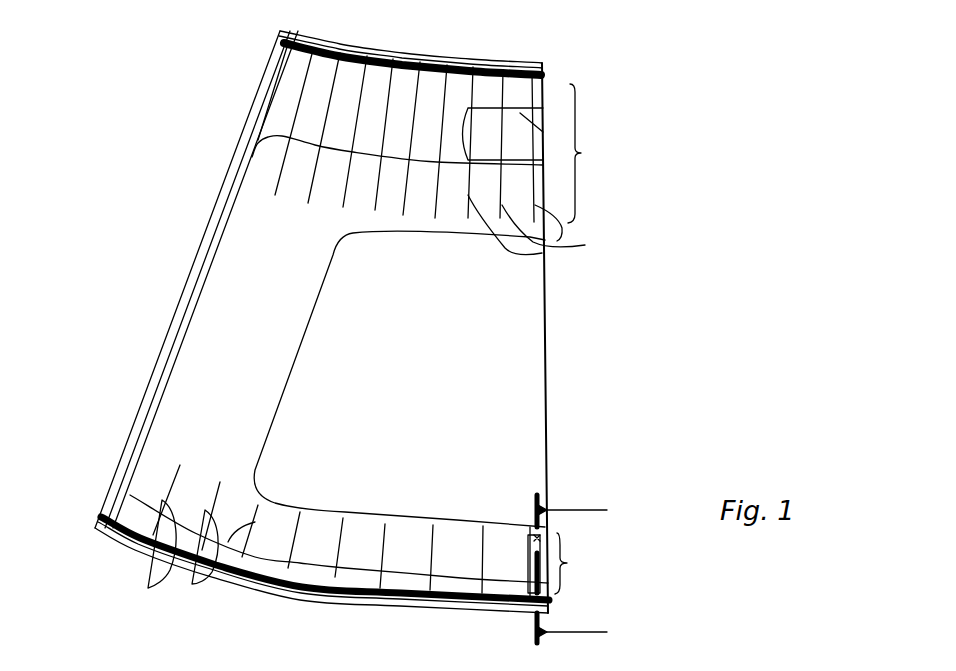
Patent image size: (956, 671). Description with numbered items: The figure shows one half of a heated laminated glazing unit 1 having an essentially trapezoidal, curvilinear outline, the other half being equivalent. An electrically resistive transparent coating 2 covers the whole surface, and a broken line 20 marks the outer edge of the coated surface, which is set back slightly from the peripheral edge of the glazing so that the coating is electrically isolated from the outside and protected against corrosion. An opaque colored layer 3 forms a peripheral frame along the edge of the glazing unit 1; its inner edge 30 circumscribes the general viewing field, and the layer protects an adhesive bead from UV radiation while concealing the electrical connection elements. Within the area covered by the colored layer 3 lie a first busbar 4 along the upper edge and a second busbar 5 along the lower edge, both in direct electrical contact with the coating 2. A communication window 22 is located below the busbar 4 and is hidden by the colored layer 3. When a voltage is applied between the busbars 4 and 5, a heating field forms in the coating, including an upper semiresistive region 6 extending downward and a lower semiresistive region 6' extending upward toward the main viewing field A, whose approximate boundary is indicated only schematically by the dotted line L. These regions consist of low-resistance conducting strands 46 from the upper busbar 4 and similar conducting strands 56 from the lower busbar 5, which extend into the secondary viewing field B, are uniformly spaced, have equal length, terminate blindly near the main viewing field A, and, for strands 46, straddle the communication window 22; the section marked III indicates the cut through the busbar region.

The heated laminated glazing unit 1 is at (203, 82).
The electrically resistive transparent coating 2 is at (440, 370).
The opaque colored layer 3 is at (522, 93).
The first busbar 4 is at (543, 74).
The second busbar 5 is at (548, 603).
The upper semiresistive region 6 is at (435, 135).
The lower semiresistive region 6' is at (567, 563).
The outer edge of the coated surface 20 is at (210, 216).
The communication window 22 is at (543, 129).
The inner edge of the colored layer 30 is at (547, 174).
The conducting strands 46 is at (548, 246).
The conducting strands 56 is at (202, 580).
The main viewing field A is at (349, 425).
The secondary viewing field B is at (227, 425).
The dotted line L is at (458, 518).
The section line III- III is at (572, 564).